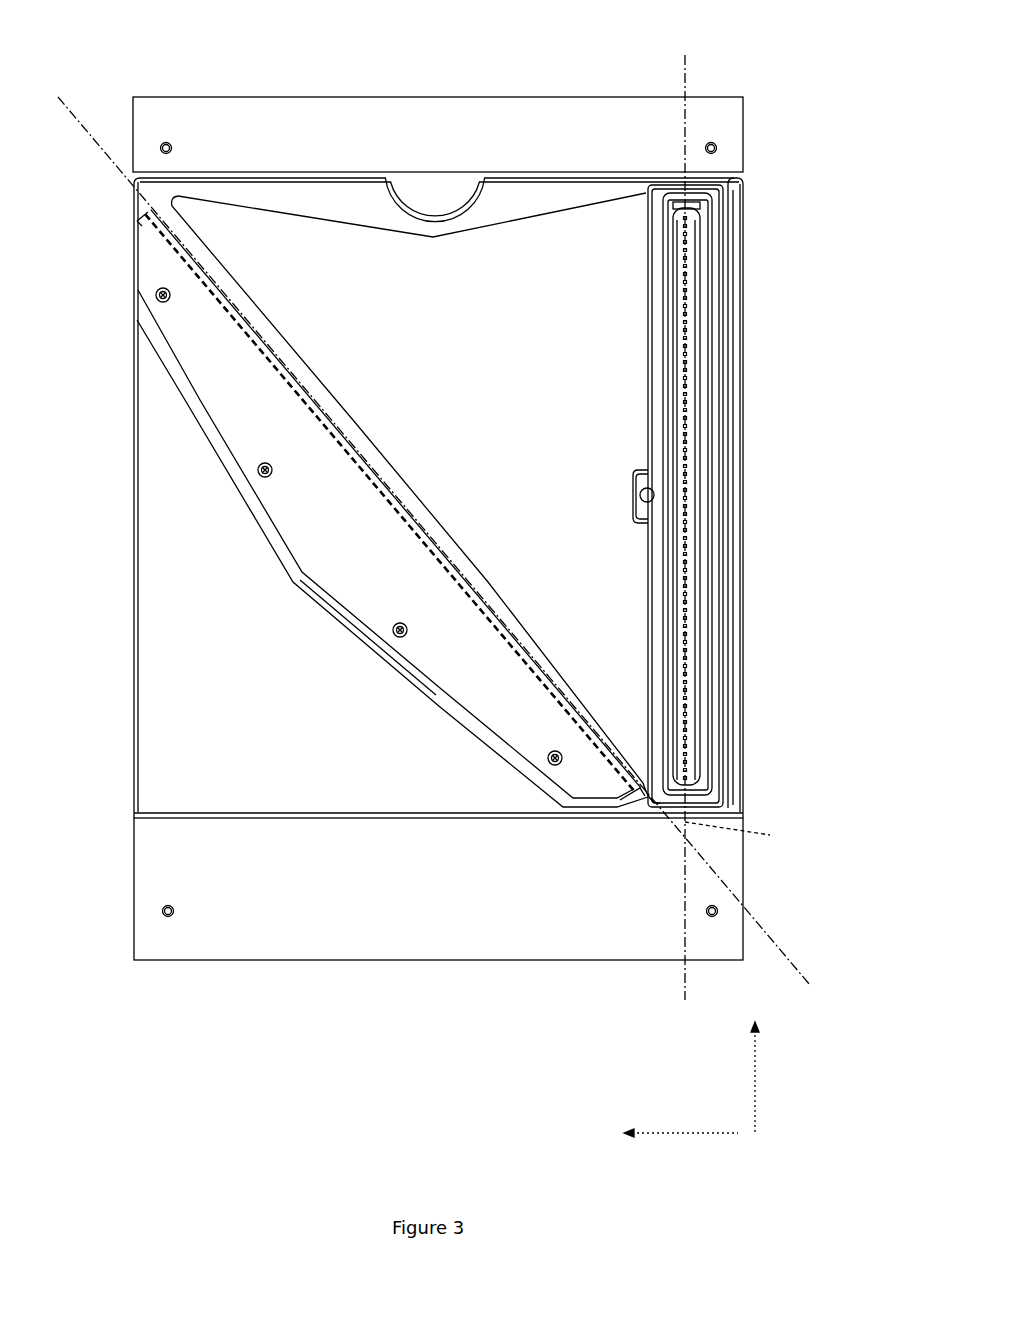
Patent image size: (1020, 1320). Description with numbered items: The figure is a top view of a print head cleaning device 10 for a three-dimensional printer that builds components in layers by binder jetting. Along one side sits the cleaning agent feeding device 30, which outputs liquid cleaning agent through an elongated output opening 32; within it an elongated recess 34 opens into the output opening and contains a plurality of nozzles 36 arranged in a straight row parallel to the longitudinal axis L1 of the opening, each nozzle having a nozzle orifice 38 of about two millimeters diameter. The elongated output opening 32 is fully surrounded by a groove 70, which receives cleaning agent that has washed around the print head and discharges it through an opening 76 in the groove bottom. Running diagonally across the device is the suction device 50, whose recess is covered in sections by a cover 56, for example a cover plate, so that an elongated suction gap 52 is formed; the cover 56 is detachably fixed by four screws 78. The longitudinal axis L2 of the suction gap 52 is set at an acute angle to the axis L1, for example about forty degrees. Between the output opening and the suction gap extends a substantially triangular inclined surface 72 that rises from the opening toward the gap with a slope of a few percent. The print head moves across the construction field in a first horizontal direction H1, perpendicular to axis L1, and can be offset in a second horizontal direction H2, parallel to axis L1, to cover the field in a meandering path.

The print head cleaning device 10 is at (256, 64).
The inclined surface 72 is at (363, 295).
The groove 70 is at (655, 215).
The cleaning agent feeding device 30 is at (693, 262).
The elongated output opening 32 is at (695, 315).
The elongated recess 34 is at (695, 383).
The nozzles 36 is at (693, 438).
The nozzle orifice 38 is at (690, 487).
The opening 76 is at (652, 500).
The screws 78 is at (263, 477).
The suction device 50 is at (335, 540).
The cover 56 is at (440, 640).
The elongated suction gap 52 is at (530, 660).
The longitudinal axis of the elongated output opening L1 is at (701, 534).
The longitudinal axis of the elongated suction gap L2 is at (434, 541).
The first horizontal direction H1 is at (681, 1122).
The second horizontal direction H2 is at (772, 1077).